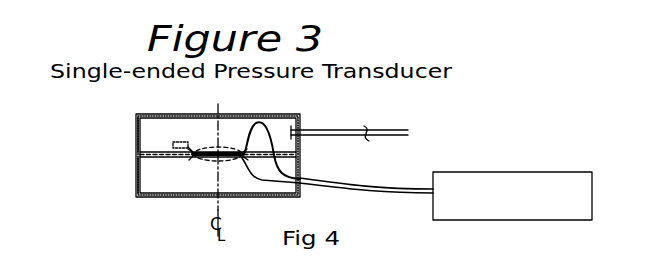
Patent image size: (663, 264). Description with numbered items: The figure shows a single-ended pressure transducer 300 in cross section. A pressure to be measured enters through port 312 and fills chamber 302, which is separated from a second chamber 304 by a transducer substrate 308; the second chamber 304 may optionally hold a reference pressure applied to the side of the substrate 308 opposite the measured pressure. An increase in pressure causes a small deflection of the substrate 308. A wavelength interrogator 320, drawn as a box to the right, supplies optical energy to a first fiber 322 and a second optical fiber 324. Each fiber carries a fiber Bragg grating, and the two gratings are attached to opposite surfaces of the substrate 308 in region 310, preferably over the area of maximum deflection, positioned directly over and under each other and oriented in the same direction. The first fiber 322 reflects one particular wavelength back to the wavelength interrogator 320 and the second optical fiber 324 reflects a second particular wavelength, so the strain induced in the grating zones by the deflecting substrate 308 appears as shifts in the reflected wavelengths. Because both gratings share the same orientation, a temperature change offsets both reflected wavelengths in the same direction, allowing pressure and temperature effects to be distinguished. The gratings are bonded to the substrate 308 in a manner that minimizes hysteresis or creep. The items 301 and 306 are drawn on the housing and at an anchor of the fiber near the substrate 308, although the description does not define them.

The single-ended pressure transducer 300 is at (197, 107).
The fiber anchor point 301 is at (175, 144).
The chamber 302 is at (151, 137).
The second chamber 304 is at (151, 170).
The housing 306 is at (137, 196).
The transducer substrate 308 is at (184, 157).
The region 310 is at (227, 161).
The port 312 is at (372, 133).
The wavelength interrogator 320 is at (512, 187).
The first fiber 322 is at (314, 180).
The second optical fiber 324 is at (317, 186).